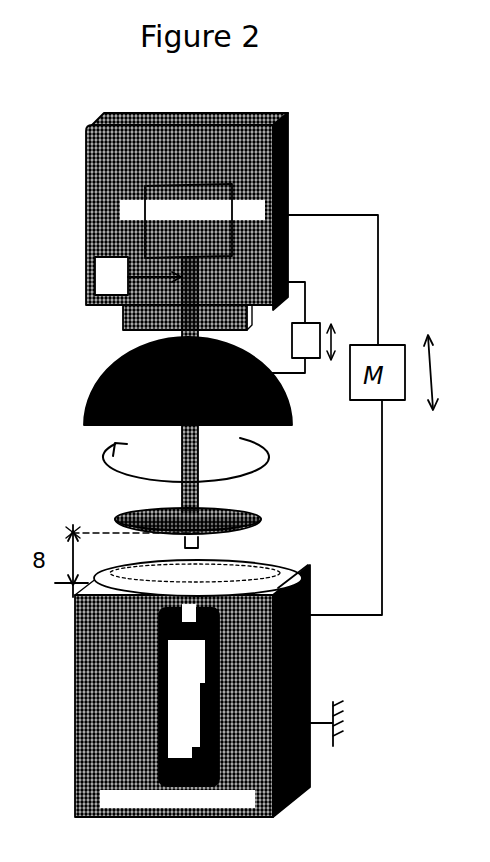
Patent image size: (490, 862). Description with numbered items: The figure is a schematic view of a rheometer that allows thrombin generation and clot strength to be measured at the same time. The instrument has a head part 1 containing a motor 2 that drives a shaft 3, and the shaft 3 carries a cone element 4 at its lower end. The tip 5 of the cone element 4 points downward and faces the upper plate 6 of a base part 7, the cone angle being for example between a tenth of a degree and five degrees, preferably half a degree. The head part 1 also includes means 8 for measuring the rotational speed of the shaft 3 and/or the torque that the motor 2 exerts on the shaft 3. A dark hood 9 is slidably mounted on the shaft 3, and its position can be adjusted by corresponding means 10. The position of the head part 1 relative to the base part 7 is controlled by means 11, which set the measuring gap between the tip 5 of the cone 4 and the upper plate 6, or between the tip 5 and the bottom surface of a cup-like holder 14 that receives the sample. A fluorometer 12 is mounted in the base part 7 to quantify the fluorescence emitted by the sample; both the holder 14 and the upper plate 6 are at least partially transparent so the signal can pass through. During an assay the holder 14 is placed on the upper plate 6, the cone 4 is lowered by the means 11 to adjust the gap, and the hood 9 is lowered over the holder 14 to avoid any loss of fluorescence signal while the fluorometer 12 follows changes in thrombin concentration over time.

The head part 1 is at (100, 172).
The motor 2 is at (188, 221).
The shaft 3 is at (198, 462).
The cone element 4 is at (132, 526).
The tip 5 is at (207, 541).
The upper plate 6 is at (289, 568).
The base part 7 is at (78, 712).
The means for measuring rotational speed and/or torque 8 is at (138, 276).
The dark hood 9 is at (103, 372).
The means for adjusting hood position 10 is at (303, 327).
The means for controlling head part position 11 is at (288, 529).
The fluorometer 12 is at (189, 695).
The holder 14 is at (310, 577).